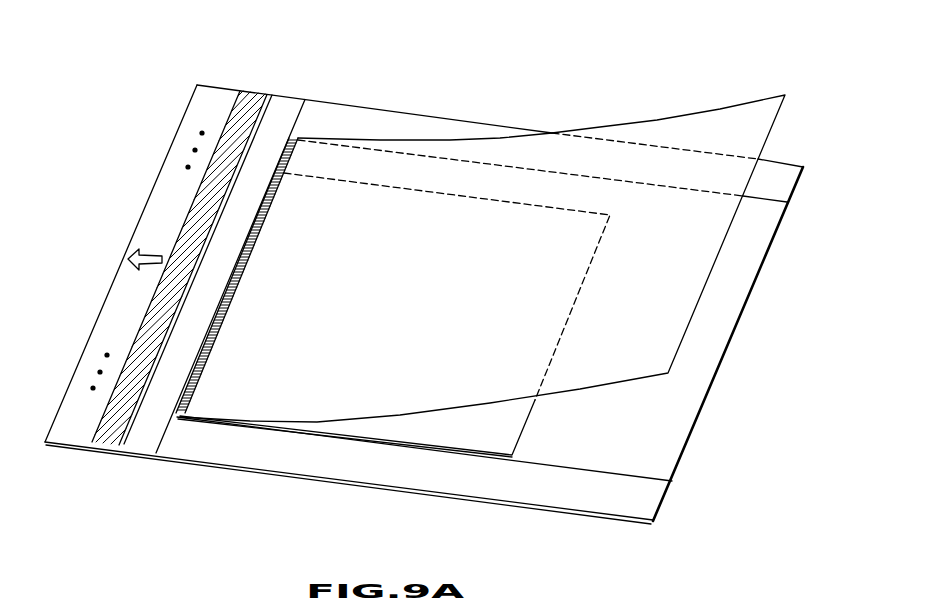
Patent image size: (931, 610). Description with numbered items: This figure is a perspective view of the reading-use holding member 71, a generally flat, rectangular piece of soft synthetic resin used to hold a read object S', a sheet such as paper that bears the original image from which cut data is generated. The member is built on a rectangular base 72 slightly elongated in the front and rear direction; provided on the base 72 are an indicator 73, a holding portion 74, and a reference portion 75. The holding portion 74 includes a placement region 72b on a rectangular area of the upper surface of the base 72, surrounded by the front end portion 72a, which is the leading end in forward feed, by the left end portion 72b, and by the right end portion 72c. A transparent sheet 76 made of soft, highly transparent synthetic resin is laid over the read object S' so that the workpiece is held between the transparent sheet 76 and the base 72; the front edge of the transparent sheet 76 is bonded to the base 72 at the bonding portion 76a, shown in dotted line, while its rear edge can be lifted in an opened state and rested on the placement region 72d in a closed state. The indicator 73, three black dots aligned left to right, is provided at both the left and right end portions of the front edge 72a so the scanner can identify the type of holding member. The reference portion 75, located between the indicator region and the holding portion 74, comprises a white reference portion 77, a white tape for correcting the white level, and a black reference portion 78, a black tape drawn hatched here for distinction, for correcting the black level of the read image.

The reading-use holding member 71 is at (353, 93).
The base 72 is at (540, 515).
The front end portion 72a is at (150, 240).
The placement region 72b is at (320, 468).
The right end portion 72c is at (435, 127).
The placement region 72d is at (702, 337).
The indicator 73 is at (187, 145).
The holding portion 74 is at (638, 422).
The reference portion 75 is at (270, 90).
The transparent sheet 76 is at (656, 133).
The bonding portion 76a is at (240, 273).
The white reference portion 77 is at (142, 448).
The black reference portion 78 is at (100, 447).
The read object S' is at (395, 358).